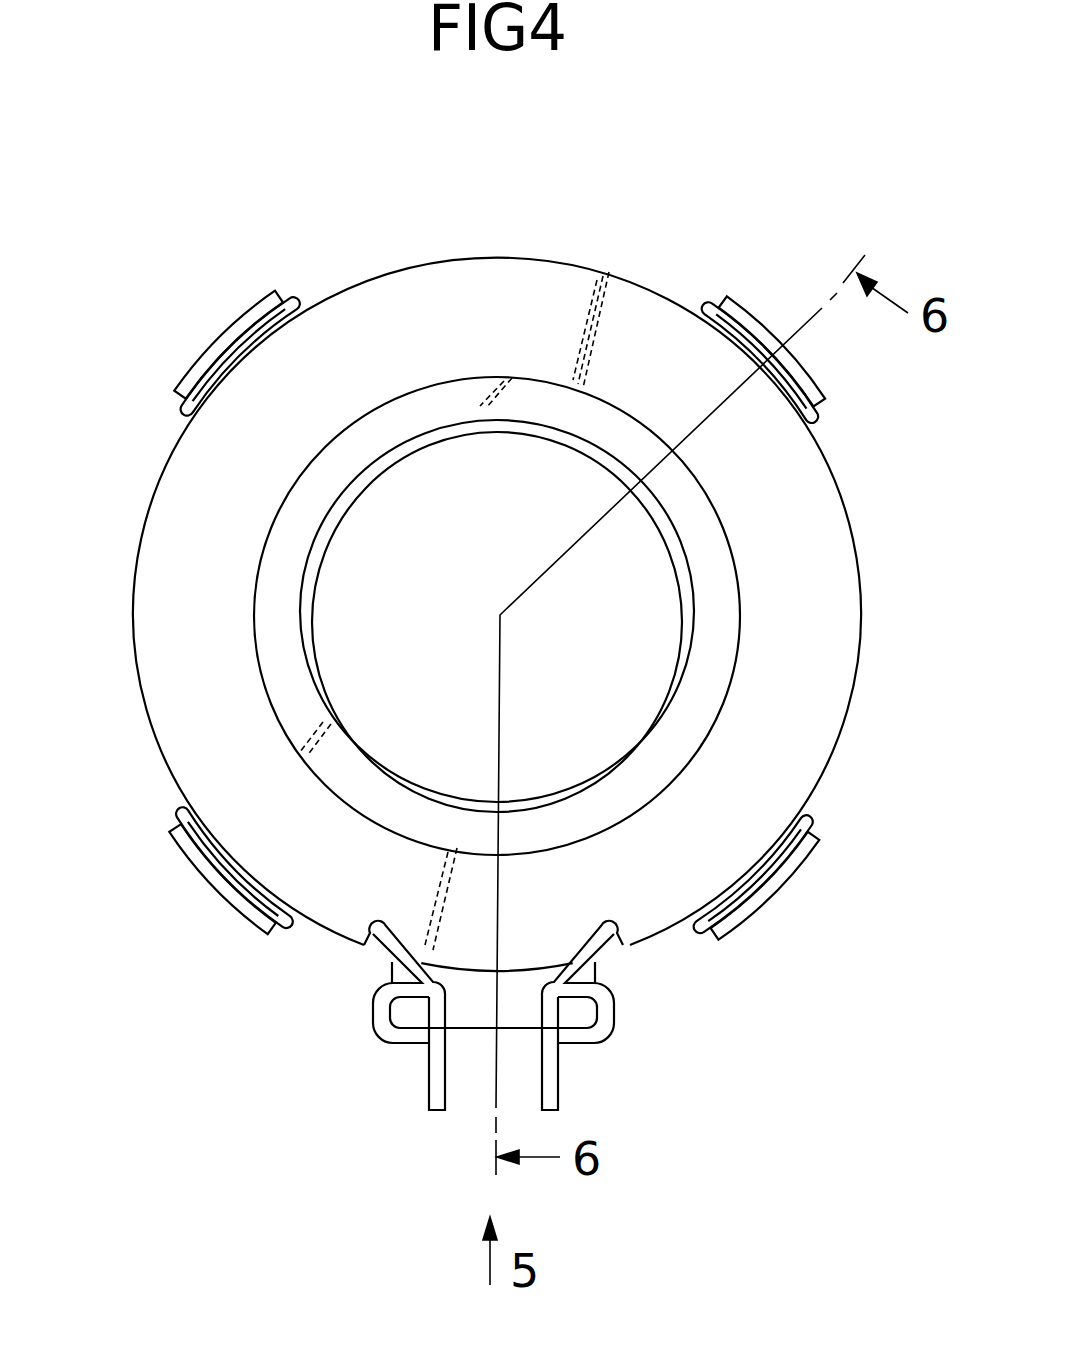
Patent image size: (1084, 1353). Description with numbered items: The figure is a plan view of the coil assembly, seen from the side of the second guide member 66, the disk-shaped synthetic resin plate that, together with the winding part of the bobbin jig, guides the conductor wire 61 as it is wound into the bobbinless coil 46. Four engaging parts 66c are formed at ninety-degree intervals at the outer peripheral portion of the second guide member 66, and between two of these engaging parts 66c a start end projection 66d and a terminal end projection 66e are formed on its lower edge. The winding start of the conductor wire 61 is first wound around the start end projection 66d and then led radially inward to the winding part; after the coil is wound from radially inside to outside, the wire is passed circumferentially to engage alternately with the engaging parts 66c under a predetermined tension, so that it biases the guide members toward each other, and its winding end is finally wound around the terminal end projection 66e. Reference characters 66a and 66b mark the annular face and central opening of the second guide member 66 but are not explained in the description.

The bobbinless coil 46 is at (472, 238).
The second guide member 66 is at (570, 263).
The front face 66a is at (180, 615).
The center bore 66b is at (353, 497).
The engaging parts 66c is at (215, 340).
The conductor wire 61 is at (302, 305).
The start end projection 66d is at (408, 1015).
The terminal end projection 66e is at (583, 1017).